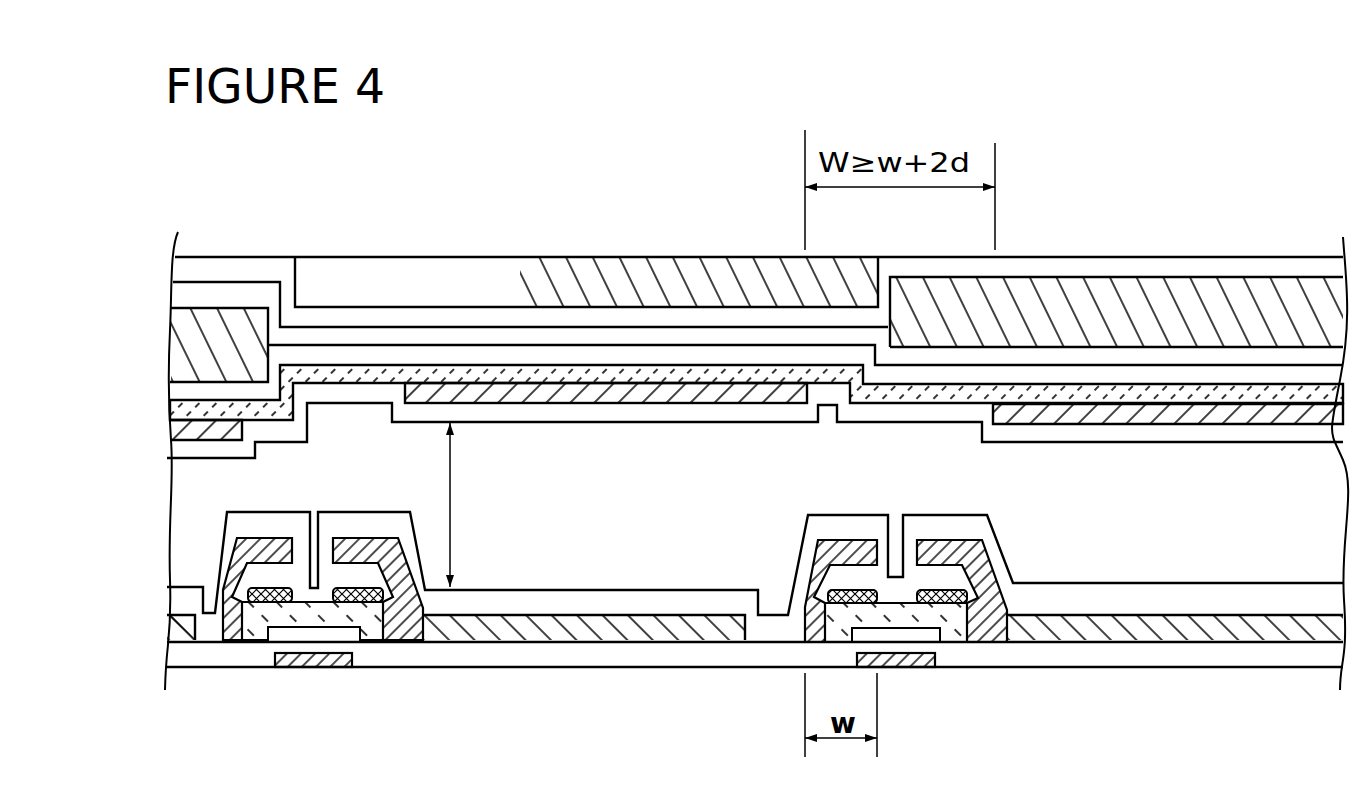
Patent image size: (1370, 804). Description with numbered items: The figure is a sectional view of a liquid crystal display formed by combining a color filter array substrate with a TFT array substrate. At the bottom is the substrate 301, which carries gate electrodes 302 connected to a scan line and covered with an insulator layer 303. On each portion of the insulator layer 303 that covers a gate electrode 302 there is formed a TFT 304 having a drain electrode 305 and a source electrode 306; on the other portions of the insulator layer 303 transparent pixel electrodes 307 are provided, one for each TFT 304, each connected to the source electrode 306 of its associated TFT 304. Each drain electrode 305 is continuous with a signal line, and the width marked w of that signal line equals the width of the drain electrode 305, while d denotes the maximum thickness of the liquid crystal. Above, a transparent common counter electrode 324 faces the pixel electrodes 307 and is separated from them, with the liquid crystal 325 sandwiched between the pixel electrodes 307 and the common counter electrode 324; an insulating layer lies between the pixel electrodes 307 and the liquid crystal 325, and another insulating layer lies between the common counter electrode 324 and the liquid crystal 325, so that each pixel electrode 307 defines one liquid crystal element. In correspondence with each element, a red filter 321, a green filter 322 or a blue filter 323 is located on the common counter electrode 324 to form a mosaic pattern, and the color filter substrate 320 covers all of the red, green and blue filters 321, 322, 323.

The substrate 301 is at (385, 739).
The gate electrode 302 is at (907, 666).
The insulator layer 303 is at (1216, 668).
The TFT 304 is at (250, 672).
The drain electrode 305 is at (263, 540).
The source electrode 306 is at (407, 570).
The pixel electrode 307 is at (467, 628).
The color filter substrate 320 is at (578, 146).
The red filter 321 is at (420, 277).
The green filter 322 is at (1030, 297).
The blue filter 323 is at (212, 317).
The common counter electrode 324 is at (587, 393).
The liquid crystal 325 is at (1103, 495).